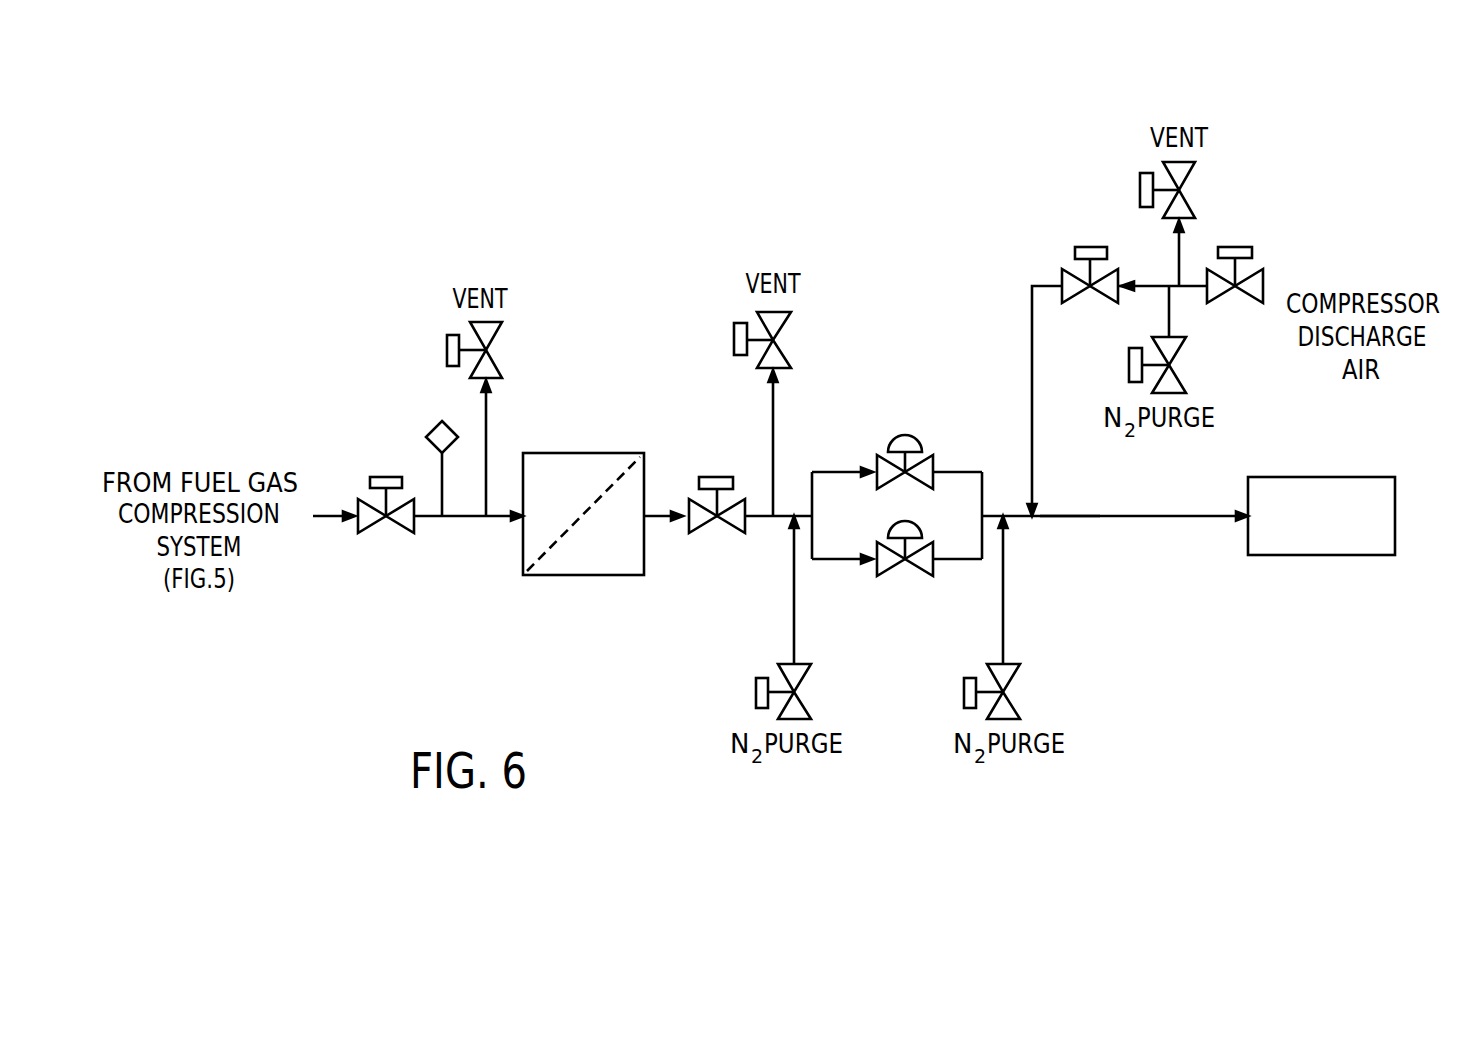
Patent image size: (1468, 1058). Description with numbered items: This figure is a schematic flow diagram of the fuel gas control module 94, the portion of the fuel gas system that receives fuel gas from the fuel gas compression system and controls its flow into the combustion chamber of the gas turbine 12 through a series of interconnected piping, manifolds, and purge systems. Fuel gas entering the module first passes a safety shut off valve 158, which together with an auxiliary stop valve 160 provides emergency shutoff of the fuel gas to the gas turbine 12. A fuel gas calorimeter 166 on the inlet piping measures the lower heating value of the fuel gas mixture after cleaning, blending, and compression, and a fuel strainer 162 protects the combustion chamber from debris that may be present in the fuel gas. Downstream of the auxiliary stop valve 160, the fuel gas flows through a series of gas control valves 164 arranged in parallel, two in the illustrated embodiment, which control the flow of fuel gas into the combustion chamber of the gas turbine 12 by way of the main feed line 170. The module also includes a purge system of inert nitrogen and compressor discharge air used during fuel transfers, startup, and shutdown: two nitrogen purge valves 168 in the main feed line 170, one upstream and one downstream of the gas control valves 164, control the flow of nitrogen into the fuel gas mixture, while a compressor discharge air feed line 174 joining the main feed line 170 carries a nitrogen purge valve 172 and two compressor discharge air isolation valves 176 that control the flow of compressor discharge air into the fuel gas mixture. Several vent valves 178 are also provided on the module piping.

The fuel gas control module 94 is at (384, 165).
The safety shut off valve 158 is at (383, 477).
The fuel gas calorimeter 166 is at (433, 428).
The fuel strainer 162 is at (581, 453).
The auxiliary stop valve 160 is at (713, 477).
The vent valve 178 is at (497, 360).
The gas control valve 164 is at (903, 436).
The nitrogen purge valve 168 is at (805, 677).
The compressor discharge air feed line 174 is at (1032, 300).
The compressor discharge air isolation valve 176 is at (1088, 247).
The nitrogen purge valve 172 is at (1180, 352).
The main feed line 170 is at (1108, 518).
The gas turbine 12 is at (1322, 556).